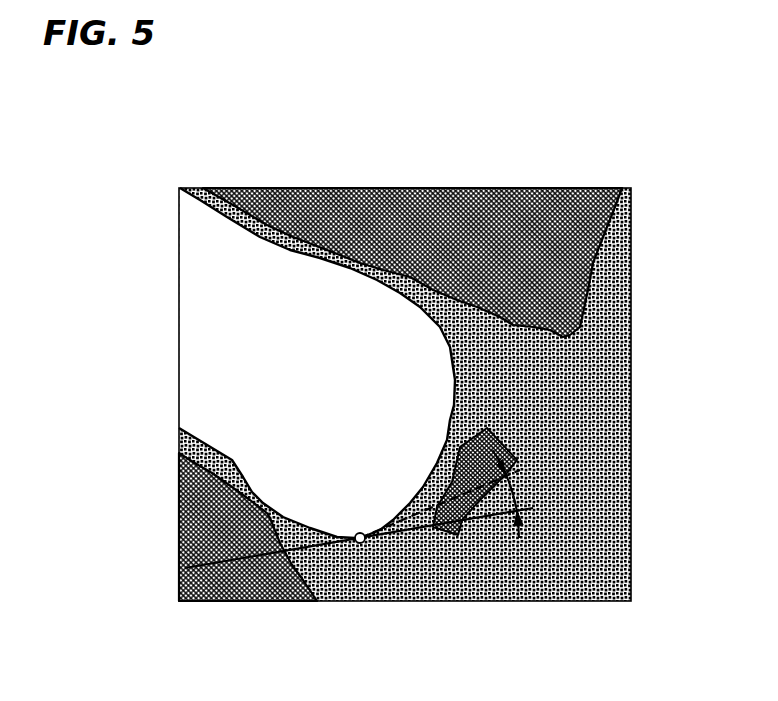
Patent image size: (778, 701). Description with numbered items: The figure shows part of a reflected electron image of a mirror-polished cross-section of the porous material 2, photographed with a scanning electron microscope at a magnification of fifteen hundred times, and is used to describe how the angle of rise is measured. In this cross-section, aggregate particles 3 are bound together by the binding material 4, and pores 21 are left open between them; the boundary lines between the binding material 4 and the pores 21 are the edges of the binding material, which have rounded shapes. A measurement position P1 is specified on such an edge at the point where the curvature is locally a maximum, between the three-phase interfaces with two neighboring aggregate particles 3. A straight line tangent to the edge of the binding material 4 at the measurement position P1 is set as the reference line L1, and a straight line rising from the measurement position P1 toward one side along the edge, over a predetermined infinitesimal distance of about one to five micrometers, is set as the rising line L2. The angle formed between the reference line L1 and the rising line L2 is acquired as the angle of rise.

The porous material 2 is at (283, 152).
The aggregate particles 3 is at (450, 222).
The binding material 4 is at (580, 433).
The pores 21 is at (213, 313).
The reference line L1 is at (410, 533).
The rising line L2 is at (427, 470).
The measurement position P1 is at (358, 544).